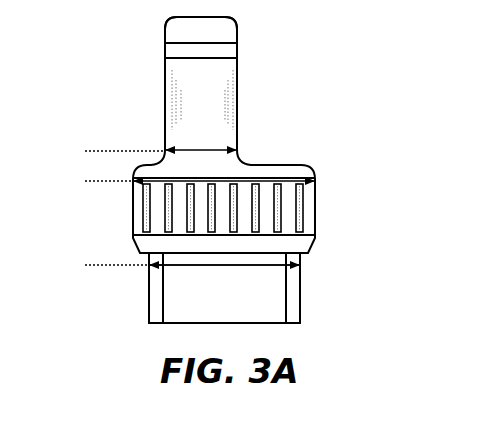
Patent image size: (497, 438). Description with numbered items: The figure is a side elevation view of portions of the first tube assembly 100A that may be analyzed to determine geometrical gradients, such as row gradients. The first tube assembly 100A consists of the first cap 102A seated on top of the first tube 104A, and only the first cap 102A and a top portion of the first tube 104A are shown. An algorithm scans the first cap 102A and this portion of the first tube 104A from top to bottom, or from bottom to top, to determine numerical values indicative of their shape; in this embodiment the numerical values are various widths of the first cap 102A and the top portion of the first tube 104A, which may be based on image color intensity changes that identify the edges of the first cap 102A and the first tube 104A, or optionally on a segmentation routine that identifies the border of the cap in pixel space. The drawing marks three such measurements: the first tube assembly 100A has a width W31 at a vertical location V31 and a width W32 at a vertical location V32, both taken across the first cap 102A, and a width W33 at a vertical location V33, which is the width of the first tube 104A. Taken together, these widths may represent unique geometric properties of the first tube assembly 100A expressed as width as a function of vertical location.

The first tube assembly 100A is at (316, 143).
The first cap 102A is at (237, 40).
The first tube 104A is at (300, 292).
The vertical location V31 is at (103, 150).
The vertical location V32 is at (177, 180).
The vertical location V33 is at (169, 265).
The width W31 is at (203, 149).
The width W32 is at (146, 189).
The width W33 is at (180, 268).